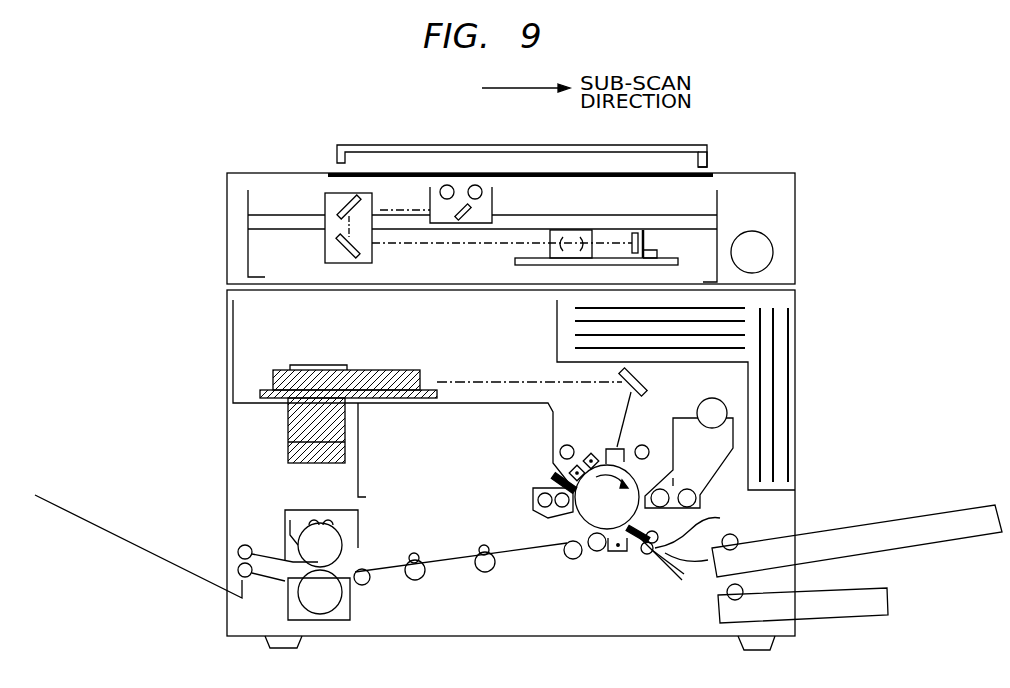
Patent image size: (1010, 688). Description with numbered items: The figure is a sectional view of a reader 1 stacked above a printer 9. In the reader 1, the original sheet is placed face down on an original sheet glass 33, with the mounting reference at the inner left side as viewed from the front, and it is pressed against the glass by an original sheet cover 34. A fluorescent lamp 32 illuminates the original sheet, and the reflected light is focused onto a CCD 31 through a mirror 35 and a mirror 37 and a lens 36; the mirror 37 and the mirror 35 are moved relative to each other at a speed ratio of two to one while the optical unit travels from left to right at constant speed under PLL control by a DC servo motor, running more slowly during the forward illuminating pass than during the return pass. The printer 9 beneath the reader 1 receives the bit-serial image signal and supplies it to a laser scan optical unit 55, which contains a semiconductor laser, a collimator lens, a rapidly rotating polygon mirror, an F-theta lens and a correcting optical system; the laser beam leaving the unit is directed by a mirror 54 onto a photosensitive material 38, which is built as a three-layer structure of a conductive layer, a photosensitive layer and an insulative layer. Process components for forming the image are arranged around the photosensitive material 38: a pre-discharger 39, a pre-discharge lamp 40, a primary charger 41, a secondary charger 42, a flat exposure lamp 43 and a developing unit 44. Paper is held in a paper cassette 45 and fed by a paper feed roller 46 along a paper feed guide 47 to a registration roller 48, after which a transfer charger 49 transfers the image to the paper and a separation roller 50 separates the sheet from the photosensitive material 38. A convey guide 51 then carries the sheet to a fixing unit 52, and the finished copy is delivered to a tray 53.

The reader 1 is at (788, 212).
The printer 9 is at (795, 372).
The CCD 31 is at (648, 243).
The fluorescent lamp 32 is at (475, 185).
The original sheet glass 33 is at (587, 173).
The original sheet cover 34 is at (699, 149).
The mirror 35 is at (333, 200).
The lens 36 is at (580, 240).
The mirror 37 is at (470, 220).
The photosensitive material 38 is at (577, 522).
The pre-discharger 39 is at (574, 463).
The pre-discharge lamp 40 is at (560, 447).
The primary charger 41 is at (593, 452).
The secondary charger 42 is at (618, 446).
The flat exposure lamp 43 is at (645, 445).
The developing unit 44 is at (703, 480).
The paper cassette 45 is at (785, 535).
The paper feed roller 46 is at (735, 535).
The paper feed guide 47 is at (661, 560).
The registration roller 48 is at (645, 555).
The transfer charger 49 is at (617, 555).
The separation roller 50 is at (595, 552).
The convey guide 51 is at (508, 553).
The fixing unit 52 is at (358, 514).
The tray 53 is at (135, 540).
The mirror 54 is at (648, 380).
The laser scan optical unit 55 is at (405, 370).